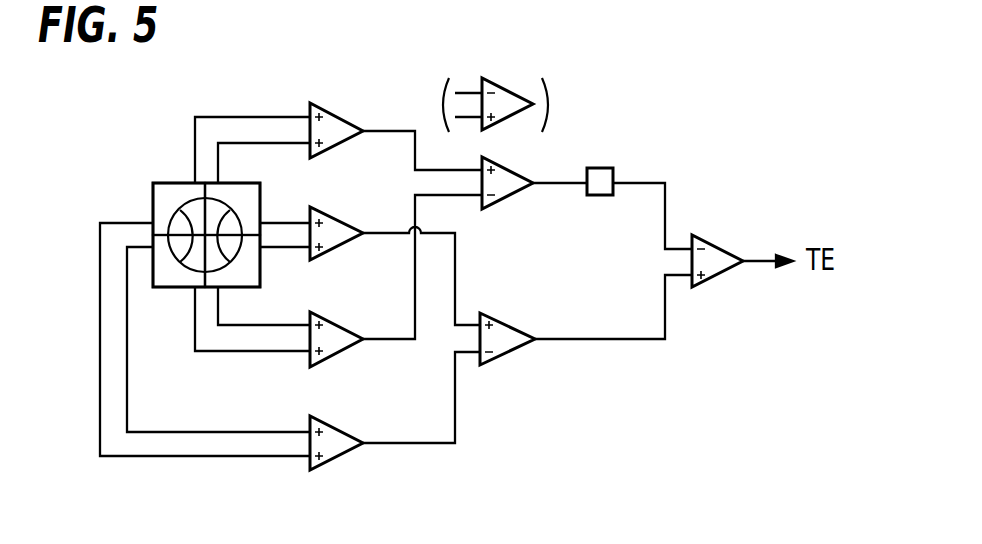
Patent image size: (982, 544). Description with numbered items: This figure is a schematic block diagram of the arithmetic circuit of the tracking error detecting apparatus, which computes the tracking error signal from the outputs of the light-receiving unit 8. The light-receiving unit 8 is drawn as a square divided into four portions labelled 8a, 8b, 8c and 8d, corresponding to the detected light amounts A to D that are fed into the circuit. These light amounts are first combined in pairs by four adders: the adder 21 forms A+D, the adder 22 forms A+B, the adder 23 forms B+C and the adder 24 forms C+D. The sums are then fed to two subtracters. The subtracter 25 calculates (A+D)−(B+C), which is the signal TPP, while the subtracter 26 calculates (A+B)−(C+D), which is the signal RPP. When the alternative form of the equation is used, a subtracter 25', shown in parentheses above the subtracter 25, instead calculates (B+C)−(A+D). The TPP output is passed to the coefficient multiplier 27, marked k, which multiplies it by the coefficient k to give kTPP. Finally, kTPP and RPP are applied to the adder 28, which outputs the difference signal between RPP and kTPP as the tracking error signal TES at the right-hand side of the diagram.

The light-receiving unit 8 is at (167, 178).
The light receiving region A 8a is at (248, 183).
The light receiving region B 8b is at (245, 289).
The light receiving region C 8c is at (163, 289).
The light receiving region D 8d is at (153, 193).
The adder 21 is at (353, 116).
The adder 22 is at (353, 220).
The adder 23 is at (353, 325).
The adder 24 is at (353, 428).
The subtracter 25 is at (528, 169).
The subtracter 25' is at (505, 83).
The subtracter 26 is at (512, 358).
The coefficient multiplier 27 is at (612, 167).
The adder 28 is at (725, 240).